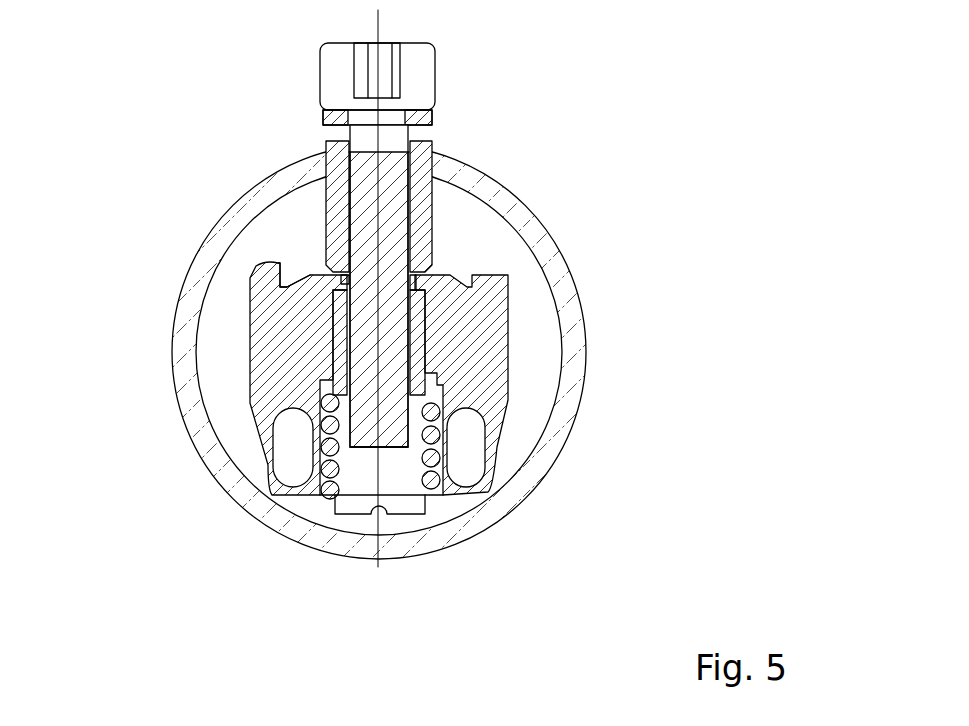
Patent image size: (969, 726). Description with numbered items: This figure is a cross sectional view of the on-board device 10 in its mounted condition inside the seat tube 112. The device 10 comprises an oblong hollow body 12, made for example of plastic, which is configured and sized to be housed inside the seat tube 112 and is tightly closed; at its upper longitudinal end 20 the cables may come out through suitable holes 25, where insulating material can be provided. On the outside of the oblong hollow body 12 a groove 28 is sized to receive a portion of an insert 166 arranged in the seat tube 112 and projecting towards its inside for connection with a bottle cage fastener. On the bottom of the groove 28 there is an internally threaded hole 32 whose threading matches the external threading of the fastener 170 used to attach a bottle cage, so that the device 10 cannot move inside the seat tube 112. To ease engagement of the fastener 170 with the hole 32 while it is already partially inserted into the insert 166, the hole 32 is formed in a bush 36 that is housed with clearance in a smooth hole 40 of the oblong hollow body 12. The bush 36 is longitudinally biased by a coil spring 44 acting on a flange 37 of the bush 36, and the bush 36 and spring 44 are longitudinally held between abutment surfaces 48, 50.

The device 10 is at (511, 439).
The oblong hollow body 12 is at (267, 303).
The upper longitudinal end 20 is at (247, 719).
The holes 25 is at (278, 455).
The groove 28 is at (299, 265).
The hole 32 is at (395, 477).
The bush 36 is at (340, 352).
The flange 37 is at (437, 383).
The smooth hole 40 is at (362, 315).
The coil spring 44 is at (335, 450).
The abutment surface 48 is at (417, 277).
The abutment surface 50 is at (440, 497).
The seat tube 112 is at (553, 445).
The insert 166 is at (420, 203).
The fastener 170 is at (323, 113).